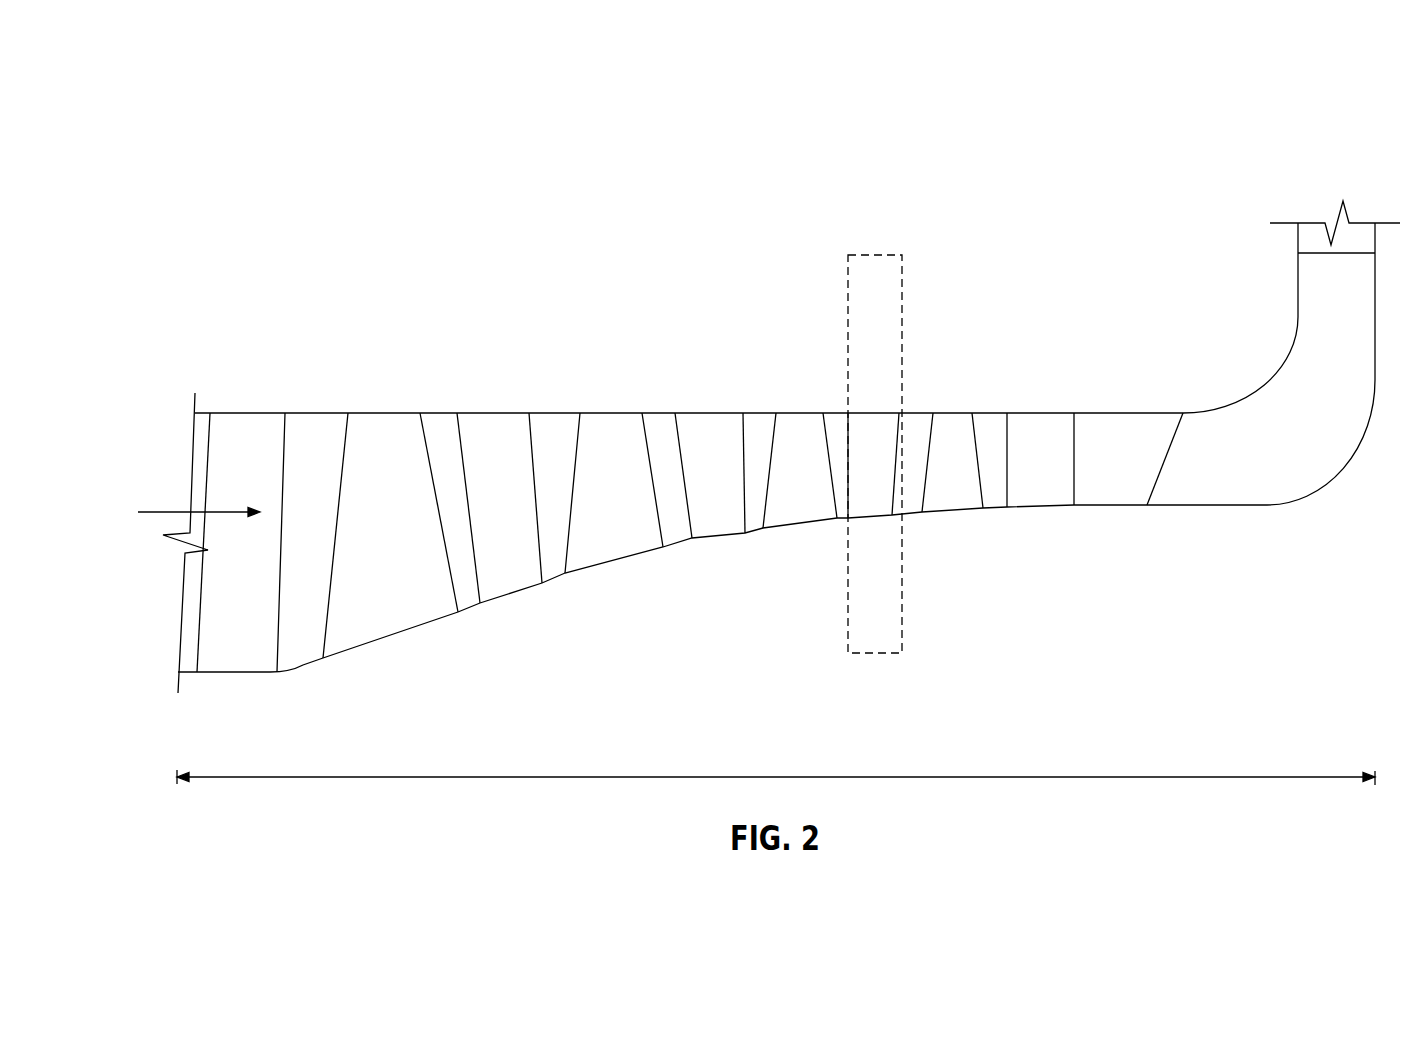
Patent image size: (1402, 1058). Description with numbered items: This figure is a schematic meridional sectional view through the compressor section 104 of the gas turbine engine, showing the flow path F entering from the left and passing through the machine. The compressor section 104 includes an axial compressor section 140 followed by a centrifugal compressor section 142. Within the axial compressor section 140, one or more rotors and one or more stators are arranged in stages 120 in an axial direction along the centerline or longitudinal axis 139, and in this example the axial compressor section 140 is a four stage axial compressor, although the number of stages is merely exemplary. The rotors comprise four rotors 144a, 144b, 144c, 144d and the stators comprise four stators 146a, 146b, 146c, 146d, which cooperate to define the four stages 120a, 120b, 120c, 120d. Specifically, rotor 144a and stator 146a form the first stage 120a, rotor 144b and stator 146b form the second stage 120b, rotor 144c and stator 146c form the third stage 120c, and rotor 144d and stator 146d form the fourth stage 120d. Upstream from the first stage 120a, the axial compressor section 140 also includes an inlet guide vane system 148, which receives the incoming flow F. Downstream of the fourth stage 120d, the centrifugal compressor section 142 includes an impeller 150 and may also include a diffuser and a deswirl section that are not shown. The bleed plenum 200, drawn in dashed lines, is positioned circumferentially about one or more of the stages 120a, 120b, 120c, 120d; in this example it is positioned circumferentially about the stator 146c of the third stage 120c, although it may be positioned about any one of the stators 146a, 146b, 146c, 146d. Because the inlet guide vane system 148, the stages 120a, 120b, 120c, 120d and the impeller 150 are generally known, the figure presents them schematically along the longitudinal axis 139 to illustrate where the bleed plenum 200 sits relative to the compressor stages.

The compressor section 104 is at (982, 188).
The stages 120 is at (438, 323).
The first stage 120a is at (440, 516).
The second stage 120b is at (665, 476).
The third stage 120c is at (841, 459).
The fourth stage 120d is at (1007, 450).
The axial compressor section 140 is at (590, 380).
The centrifugal compressor section 142 is at (1267, 370).
The rotor 144a is at (402, 620).
The rotor 144b is at (617, 545).
The rotor 144c is at (802, 517).
The rotor 144d is at (962, 498).
The stator 146a is at (512, 578).
The stator 146b is at (719, 521).
The stator 146c is at (873, 507).
The stator 146d is at (1045, 490).
The inlet guide vane system 148 is at (233, 658).
The impeller 150 is at (1277, 480).
The longitudinal axis 139 is at (1208, 777).
The bleed plenum 200 is at (872, 255).
The flow direction F is at (160, 512).